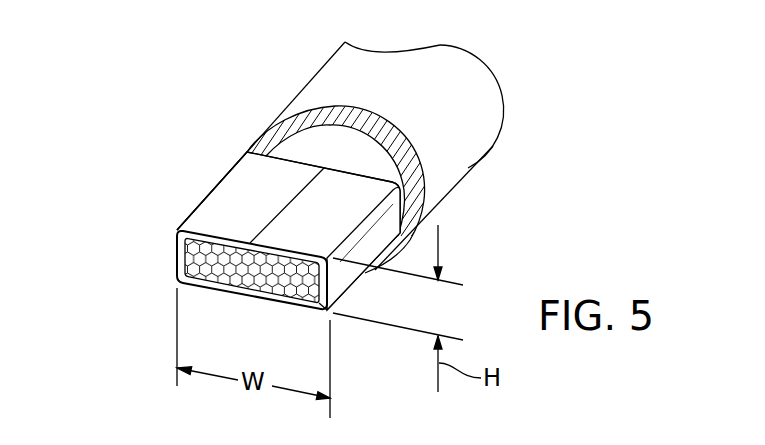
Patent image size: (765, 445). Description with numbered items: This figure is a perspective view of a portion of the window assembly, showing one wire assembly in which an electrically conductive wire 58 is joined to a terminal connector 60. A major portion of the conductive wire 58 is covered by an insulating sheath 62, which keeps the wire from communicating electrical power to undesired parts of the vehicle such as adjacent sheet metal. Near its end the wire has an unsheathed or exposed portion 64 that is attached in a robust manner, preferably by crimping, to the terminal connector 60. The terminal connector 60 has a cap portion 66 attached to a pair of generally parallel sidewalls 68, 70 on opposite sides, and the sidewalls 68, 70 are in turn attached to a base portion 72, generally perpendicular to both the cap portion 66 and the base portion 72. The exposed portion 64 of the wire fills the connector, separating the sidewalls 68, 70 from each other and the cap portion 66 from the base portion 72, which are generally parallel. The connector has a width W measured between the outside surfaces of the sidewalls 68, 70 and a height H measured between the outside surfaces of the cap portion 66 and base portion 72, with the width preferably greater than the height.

The conductive wire 58 is at (289, 142).
The terminal connector 60 is at (239, 174).
The insulating sheath 62 is at (461, 158).
The exposed portion 64 is at (200, 262).
The cap portion 66 is at (201, 212).
The sidewall 68 is at (347, 277).
The sidewall 70 is at (179, 243).
The base portion 72 is at (321, 310).